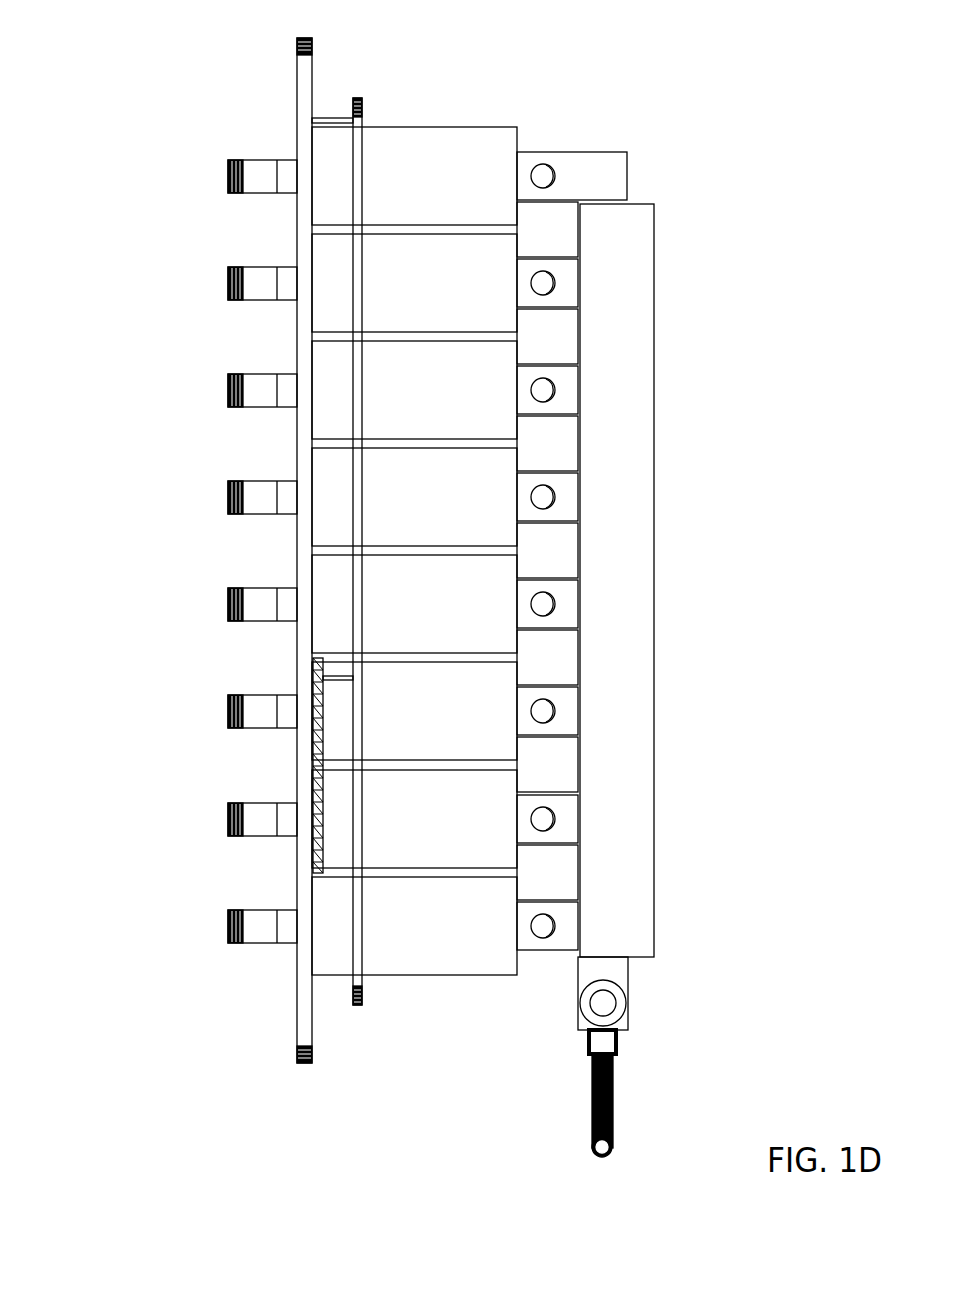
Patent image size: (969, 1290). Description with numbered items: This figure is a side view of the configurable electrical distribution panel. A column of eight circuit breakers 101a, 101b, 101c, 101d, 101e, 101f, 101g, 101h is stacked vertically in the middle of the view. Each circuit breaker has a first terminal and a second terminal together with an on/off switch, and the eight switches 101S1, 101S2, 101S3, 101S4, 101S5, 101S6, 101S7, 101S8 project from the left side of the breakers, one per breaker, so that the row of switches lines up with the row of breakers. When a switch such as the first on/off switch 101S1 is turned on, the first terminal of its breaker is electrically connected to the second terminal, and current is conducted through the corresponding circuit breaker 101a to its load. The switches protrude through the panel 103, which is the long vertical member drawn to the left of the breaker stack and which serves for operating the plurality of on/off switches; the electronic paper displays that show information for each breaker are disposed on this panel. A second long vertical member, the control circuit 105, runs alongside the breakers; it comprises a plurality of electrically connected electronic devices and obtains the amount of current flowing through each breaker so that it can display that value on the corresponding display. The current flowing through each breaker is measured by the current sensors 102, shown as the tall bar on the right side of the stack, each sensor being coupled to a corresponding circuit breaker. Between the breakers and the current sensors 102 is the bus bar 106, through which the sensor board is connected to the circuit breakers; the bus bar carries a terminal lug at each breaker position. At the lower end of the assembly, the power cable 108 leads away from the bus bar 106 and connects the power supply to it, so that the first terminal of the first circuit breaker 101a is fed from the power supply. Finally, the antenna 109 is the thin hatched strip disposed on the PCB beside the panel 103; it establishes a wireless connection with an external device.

The circuit breaker 101a is at (414, 176).
The circuit breaker 101b is at (414, 283).
The circuit breaker 101c is at (414, 390).
The circuit breaker 101d is at (414, 497).
The circuit breaker 101e is at (414, 604).
The circuit breaker 101f is at (414, 711).
The circuit breaker 101g is at (414, 819).
The circuit breaker 101h is at (414, 926).
The on/off switch 101S1 is at (235, 153).
The on/off switch 101S2 is at (233, 260).
The on/off switch 101S3 is at (232, 375).
The on/off switch 101S4 is at (232, 483).
The on/off switch 101S5 is at (232, 588).
The on/off switch 101S6 is at (232, 695).
The on/off switch 101S7 is at (232, 833).
The on/off switch 101S8 is at (230, 933).
The current sensor 102 is at (625, 278).
The panel 103 is at (293, 103).
The control circuit 105 is at (363, 117).
The bus bar 106 is at (592, 160).
The power cable 108 is at (615, 1112).
The antenna 109 is at (315, 762).